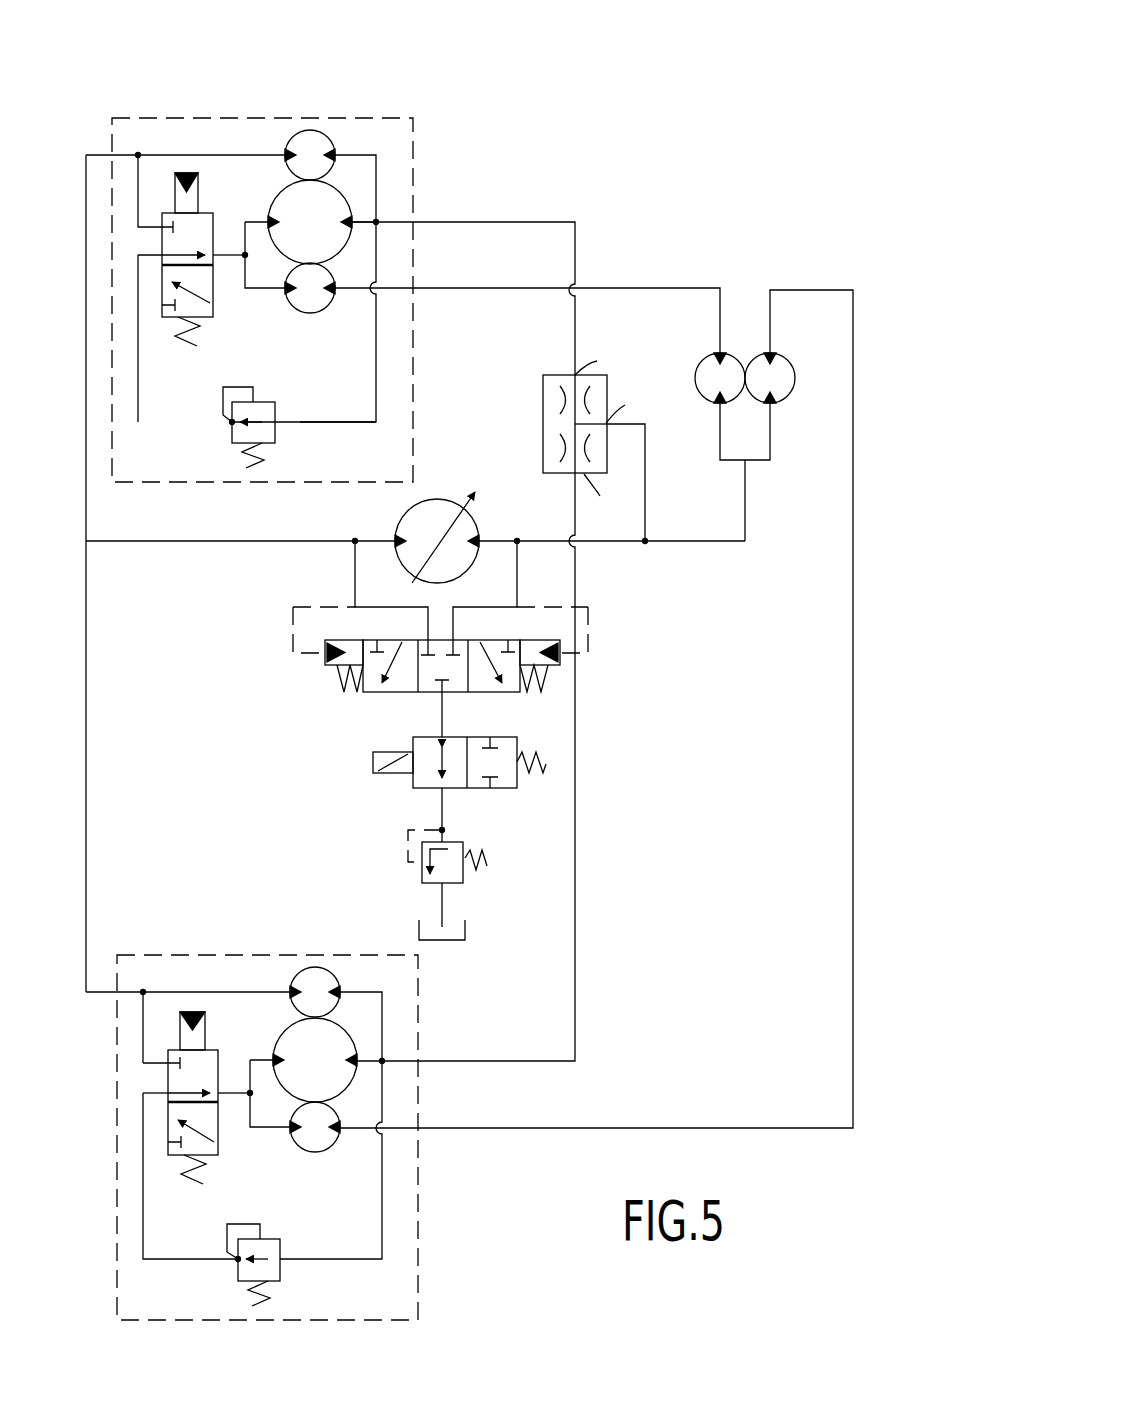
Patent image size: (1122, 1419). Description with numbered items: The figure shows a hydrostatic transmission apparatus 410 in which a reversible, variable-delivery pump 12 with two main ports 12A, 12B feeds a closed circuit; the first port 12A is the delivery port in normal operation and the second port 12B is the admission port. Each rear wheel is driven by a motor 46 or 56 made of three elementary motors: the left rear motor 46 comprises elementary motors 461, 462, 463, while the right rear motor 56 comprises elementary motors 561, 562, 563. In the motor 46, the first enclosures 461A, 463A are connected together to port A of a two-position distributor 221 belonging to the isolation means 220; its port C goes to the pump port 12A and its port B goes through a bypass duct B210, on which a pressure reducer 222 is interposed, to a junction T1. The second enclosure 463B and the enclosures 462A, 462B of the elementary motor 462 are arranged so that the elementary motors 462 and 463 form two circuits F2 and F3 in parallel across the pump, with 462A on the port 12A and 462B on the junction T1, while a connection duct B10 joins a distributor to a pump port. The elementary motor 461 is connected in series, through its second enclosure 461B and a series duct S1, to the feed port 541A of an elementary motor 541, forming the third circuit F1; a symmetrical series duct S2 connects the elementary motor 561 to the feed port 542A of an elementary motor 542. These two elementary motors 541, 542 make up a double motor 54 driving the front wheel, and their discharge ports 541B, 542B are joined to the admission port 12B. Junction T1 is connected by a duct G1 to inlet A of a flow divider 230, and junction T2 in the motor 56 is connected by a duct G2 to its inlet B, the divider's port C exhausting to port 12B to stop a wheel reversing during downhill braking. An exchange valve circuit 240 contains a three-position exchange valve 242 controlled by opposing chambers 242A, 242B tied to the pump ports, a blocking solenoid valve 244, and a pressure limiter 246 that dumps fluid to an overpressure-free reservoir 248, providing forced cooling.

The apparatus 410 is at (667, 100).
The motor 46 is at (265, 66).
The elementary motor 462 is at (306, 130).
The first enclosure 462A is at (288, 146).
The second enclosure 462B is at (331, 146).
The elementary motor 463 is at (351, 196).
The first enclosure 463A is at (268, 216).
The second enclosure 463B is at (348, 242).
The elementary motor 461 is at (306, 312).
The first enclosure 461A is at (287, 288).
The second enclosure 461B is at (334, 292).
The isolation means 220 is at (167, 320).
The two-position distributor 221 is at (208, 319).
The pressure reducer 222 is at (266, 402).
The connection duct B10 is at (180, 459).
The bypass duct B210 is at (332, 421).
The circuit F2 is at (381, 160).
The circuit F3 is at (246, 218).
The junction T1 is at (386, 216).
The duct G1 is at (557, 222).
The series duct S1 is at (600, 290).
The series duct S2 is at (816, 290).
The third circuit F1 is at (504, 294).
The duct G2 is at (575, 1040).
The junction T2 is at (384, 1061).
The pump 12 is at (438, 498).
The first port 12A is at (393, 541).
The second port 12B is at (481, 541).
The flow divider 230 is at (534, 423).
The double motor 54 is at (743, 350).
The elementary motor 541 is at (716, 379).
The feed port 541A is at (713, 355).
The discharge port 541B is at (710, 396).
The elementary motor 542 is at (791, 379).
The feed port 542A is at (775, 355).
The discharge port 542B is at (778, 396).
The exchange valve circuit 240 is at (316, 806).
The three-position exchange valve 242 is at (363, 699).
The hydraulic control chamber 242A is at (326, 660).
The hydraulic control chamber 242B is at (562, 660).
The blocking solenoid valve 244 is at (489, 793).
The pressure limiter 246 is at (464, 884).
The overpressure-free reservoir 248 is at (465, 928).
The motor 56 is at (272, 950).
The elementary motor 562 is at (314, 972).
The elementary motor 563 is at (300, 1039).
The elementary motor 561 is at (308, 1139).